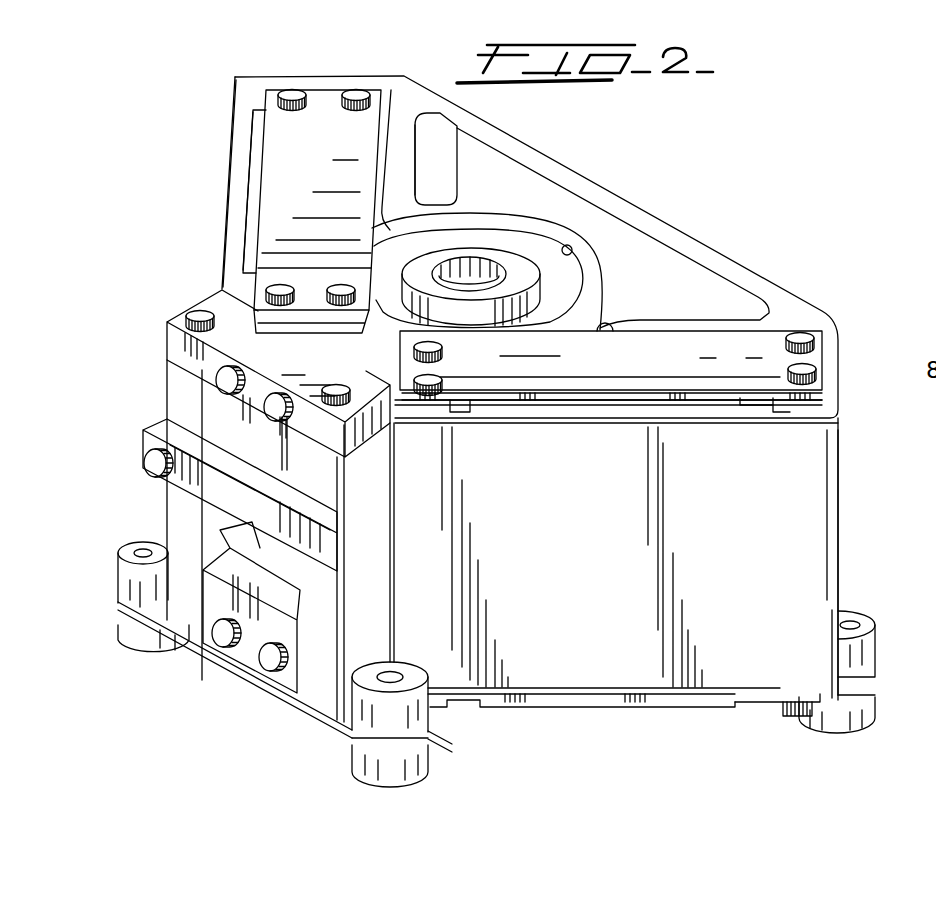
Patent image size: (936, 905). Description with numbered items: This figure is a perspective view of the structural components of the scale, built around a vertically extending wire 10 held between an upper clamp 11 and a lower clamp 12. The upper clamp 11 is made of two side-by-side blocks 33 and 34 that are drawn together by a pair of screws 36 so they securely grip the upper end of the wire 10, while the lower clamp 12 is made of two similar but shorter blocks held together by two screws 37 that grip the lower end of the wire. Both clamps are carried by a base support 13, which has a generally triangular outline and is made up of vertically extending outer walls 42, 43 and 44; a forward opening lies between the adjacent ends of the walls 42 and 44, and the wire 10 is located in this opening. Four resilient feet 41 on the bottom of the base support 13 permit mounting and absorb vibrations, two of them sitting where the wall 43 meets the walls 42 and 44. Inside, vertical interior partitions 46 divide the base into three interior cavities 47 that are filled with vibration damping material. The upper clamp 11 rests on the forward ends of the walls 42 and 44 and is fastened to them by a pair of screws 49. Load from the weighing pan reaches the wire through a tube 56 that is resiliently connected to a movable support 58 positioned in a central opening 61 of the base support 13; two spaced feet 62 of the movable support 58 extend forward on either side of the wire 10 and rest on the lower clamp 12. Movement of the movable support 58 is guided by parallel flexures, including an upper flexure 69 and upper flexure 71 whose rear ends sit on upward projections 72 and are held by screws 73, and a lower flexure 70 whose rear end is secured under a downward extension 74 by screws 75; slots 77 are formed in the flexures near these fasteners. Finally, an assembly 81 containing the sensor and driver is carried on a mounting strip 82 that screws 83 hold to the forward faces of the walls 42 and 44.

The wire 10 is at (283, 470).
The upper clamp 11 is at (165, 316).
The lower clamp 12 is at (287, 670).
The base support 13 is at (847, 487).
The block 33 is at (217, 292).
The block 34 is at (180, 320).
The screws 36 is at (233, 392).
The screws 37 is at (223, 640).
The resilient feet 41 is at (147, 653).
The outer wall 42 is at (608, 500).
The outer wall 43 is at (602, 197).
The outer wall 44 is at (243, 152).
The interior partitions 46 is at (413, 200).
The interior cavities 47 is at (258, 127).
The screws 49 is at (187, 324).
The tube 56 is at (468, 262).
The movable support 58 is at (528, 245).
The central opening 61 is at (572, 250).
The feet 62 is at (277, 627).
The upper flexure 69 is at (306, 138).
The lower flexure 70 is at (577, 702).
The upper flexure 71 is at (748, 363).
The upward projections 72 is at (783, 408).
The screws 73 is at (356, 95).
The downward extensions 74 is at (777, 693).
The screws 75 is at (788, 717).
The slots 77 is at (466, 404).
The assembly 81 is at (148, 422).
The mounting block or strip 82 is at (213, 457).
The screws 83 is at (152, 463).